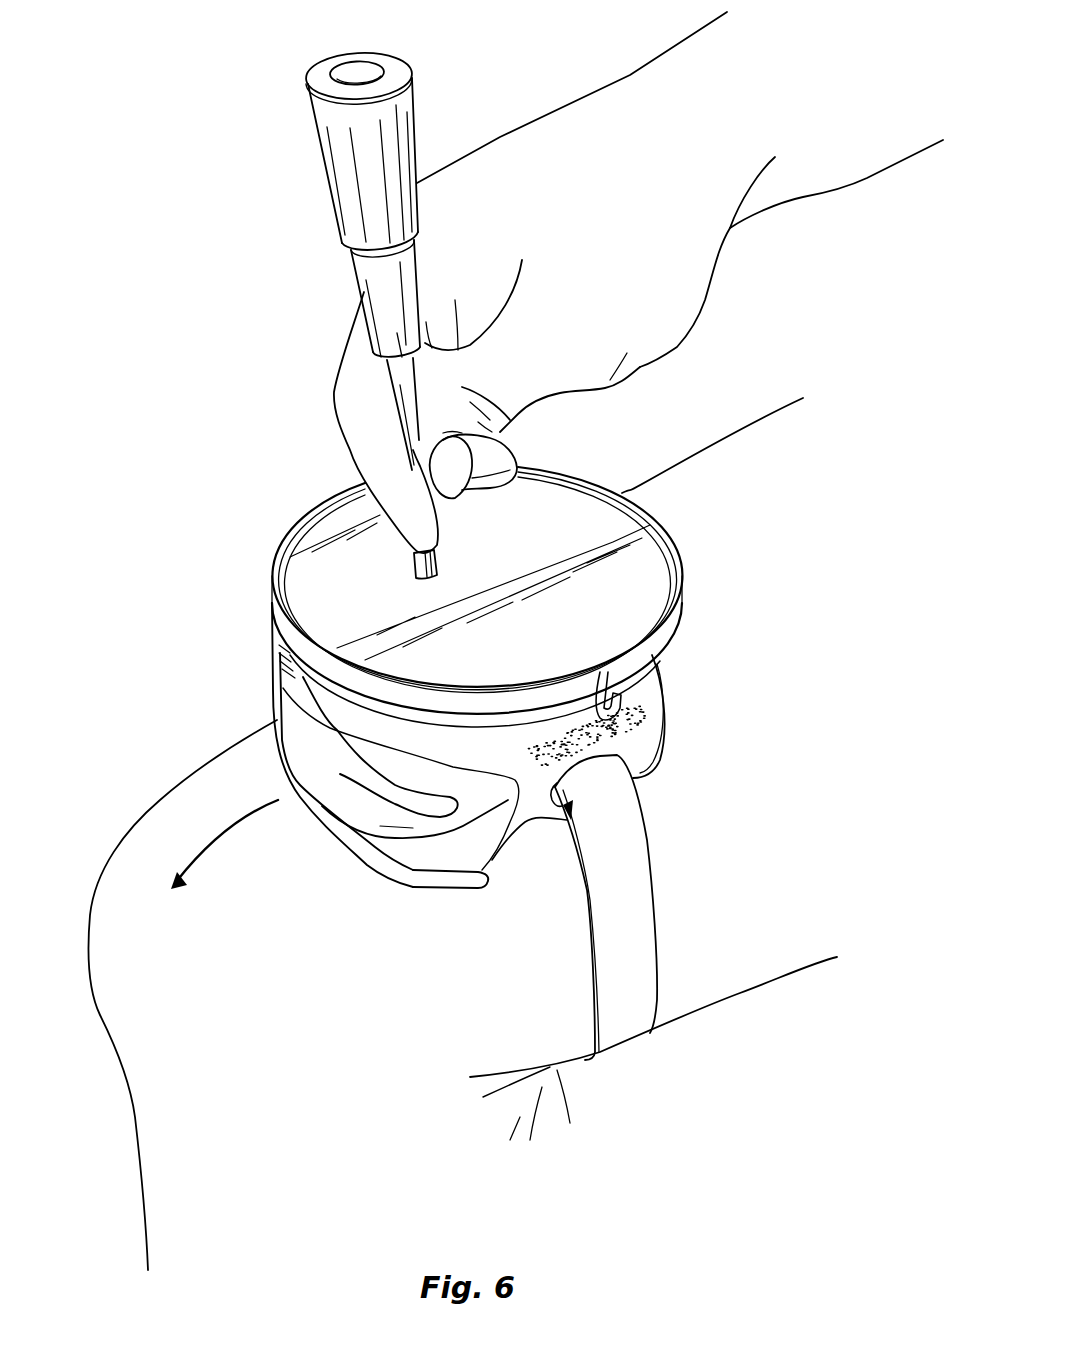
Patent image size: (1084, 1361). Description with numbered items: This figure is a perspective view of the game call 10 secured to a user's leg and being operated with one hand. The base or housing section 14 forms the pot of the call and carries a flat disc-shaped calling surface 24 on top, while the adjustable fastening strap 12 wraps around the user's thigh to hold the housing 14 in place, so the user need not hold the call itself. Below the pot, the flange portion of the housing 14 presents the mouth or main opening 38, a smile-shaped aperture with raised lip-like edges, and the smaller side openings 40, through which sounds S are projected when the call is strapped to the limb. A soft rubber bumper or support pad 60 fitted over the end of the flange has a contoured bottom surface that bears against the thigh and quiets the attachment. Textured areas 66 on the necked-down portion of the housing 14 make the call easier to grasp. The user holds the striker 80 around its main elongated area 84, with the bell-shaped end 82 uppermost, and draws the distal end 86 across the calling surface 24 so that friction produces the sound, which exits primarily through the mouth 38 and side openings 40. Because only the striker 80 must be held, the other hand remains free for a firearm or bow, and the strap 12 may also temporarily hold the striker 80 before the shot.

The game call 10 is at (240, 665).
The fastening strap 12 is at (640, 914).
The base or housing section 14 is at (376, 859).
The calling surface 24 is at (492, 581).
The mouth or main opening 38 is at (426, 804).
The side openings 40 is at (495, 862).
The bumper or support pad 60 is at (443, 882).
The textured areas 66 is at (543, 767).
The striker 80 is at (258, 104).
The bell-shaped end 82 is at (357, 181).
The main elongated area 84 is at (402, 433).
The distal end 86 is at (414, 577).
The sounds S is at (210, 843).